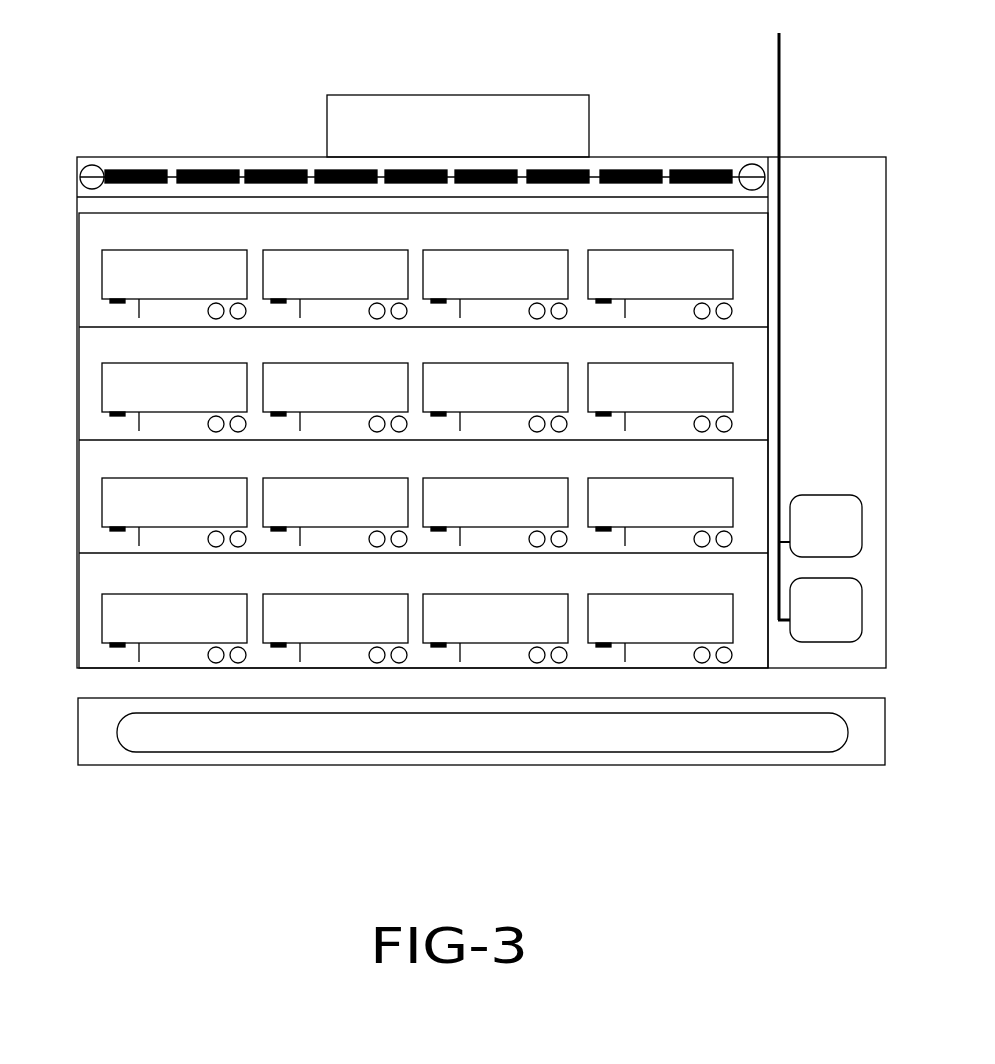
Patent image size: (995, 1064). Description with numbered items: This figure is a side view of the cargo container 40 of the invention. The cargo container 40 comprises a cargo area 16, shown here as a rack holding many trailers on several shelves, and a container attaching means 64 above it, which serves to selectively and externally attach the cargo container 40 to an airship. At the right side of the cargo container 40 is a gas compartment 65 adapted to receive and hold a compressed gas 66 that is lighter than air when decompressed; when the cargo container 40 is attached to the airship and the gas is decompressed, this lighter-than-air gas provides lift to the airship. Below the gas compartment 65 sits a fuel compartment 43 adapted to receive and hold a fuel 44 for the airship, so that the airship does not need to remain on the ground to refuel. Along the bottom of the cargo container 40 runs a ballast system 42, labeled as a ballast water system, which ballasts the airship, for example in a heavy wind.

The cargo area 16 is at (132, 270).
The cargo container 40 is at (122, 429).
The ballast system 42 is at (180, 735).
The fuel compartment 43 is at (817, 628).
The fuel 44 is at (835, 615).
The container attaching means 64 is at (497, 112).
The gas compartment 65 is at (805, 505).
The compressed gas 66 is at (839, 515).